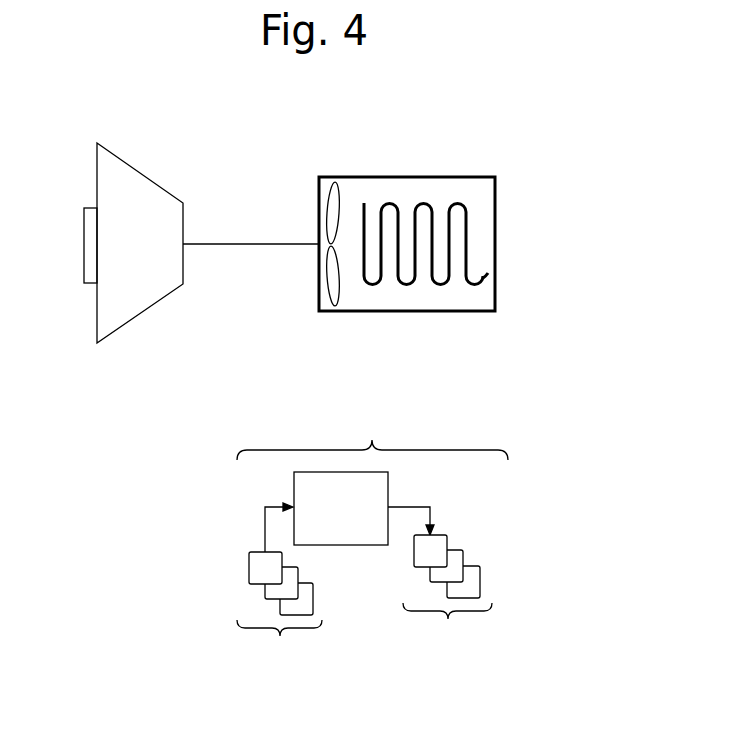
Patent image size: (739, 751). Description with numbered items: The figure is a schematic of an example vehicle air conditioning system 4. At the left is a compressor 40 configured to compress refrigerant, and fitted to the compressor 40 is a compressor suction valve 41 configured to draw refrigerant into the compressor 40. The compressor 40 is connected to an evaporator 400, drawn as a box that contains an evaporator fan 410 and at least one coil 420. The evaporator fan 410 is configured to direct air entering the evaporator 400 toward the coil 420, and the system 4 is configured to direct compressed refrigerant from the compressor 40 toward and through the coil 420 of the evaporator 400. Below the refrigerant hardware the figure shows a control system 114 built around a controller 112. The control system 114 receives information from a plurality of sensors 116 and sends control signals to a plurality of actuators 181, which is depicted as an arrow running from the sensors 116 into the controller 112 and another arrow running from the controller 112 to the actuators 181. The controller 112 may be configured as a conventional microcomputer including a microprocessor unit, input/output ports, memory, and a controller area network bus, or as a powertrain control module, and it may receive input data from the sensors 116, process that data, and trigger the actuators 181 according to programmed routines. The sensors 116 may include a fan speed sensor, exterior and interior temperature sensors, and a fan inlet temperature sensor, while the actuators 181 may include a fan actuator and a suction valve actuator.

The vehicle air conditioning system 4 is at (580, 162).
The compressor 40 is at (146, 181).
The compressor suction valve 41 is at (84, 245).
The evaporator 400 is at (495, 245).
The evaporator fan 410 is at (340, 303).
The coil 420 is at (473, 288).
The control system 114 is at (372, 537).
The controller 112 is at (341, 508).
The sensors 116 is at (279, 617).
The actuators 181 is at (447, 600).